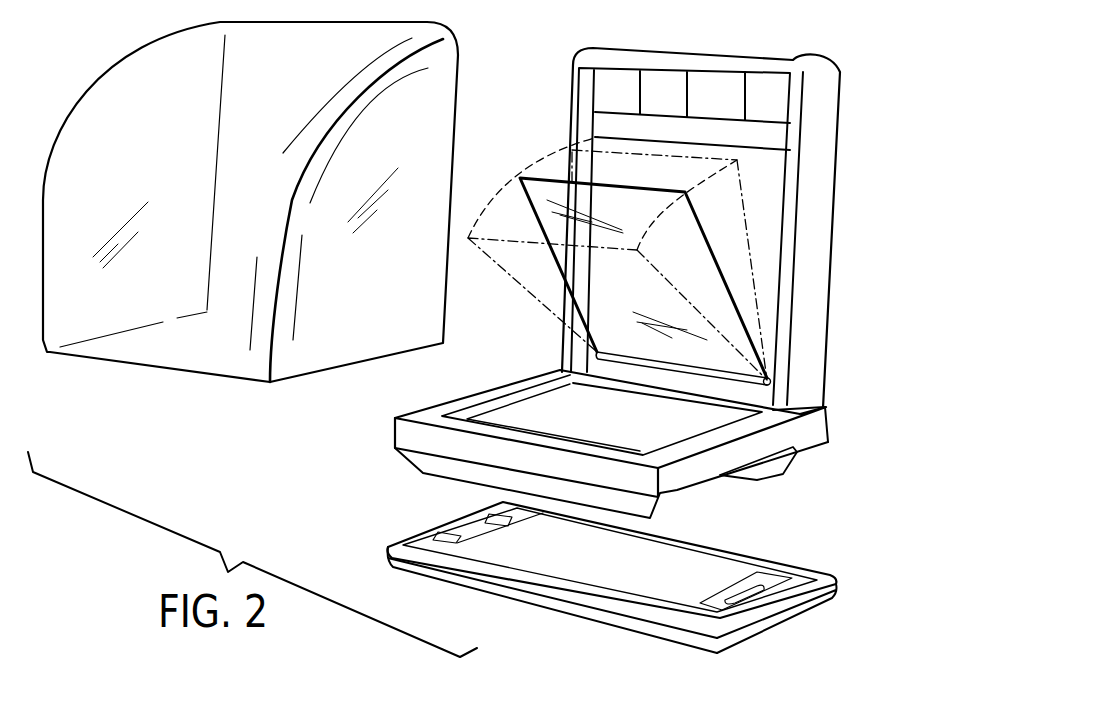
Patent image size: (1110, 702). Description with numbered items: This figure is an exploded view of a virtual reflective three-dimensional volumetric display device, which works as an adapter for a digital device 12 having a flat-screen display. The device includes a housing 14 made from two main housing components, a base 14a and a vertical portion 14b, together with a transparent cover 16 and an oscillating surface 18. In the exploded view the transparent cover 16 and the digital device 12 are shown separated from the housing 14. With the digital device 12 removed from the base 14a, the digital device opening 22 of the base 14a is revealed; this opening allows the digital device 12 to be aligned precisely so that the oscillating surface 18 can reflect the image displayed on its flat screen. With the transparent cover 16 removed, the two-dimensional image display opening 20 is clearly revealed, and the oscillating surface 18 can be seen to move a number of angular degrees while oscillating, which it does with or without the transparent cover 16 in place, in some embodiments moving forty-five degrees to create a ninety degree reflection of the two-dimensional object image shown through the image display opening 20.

The digital device 12 is at (830, 578).
The housing 14 is at (728, 221).
The base 14a is at (827, 422).
The vertical portion 14b is at (815, 230).
The transparent cover 16 is at (128, 82).
The oscillating surface 18 is at (545, 180).
The 2D image display opening 20 is at (611, 437).
The digital device opening 22 is at (712, 488).